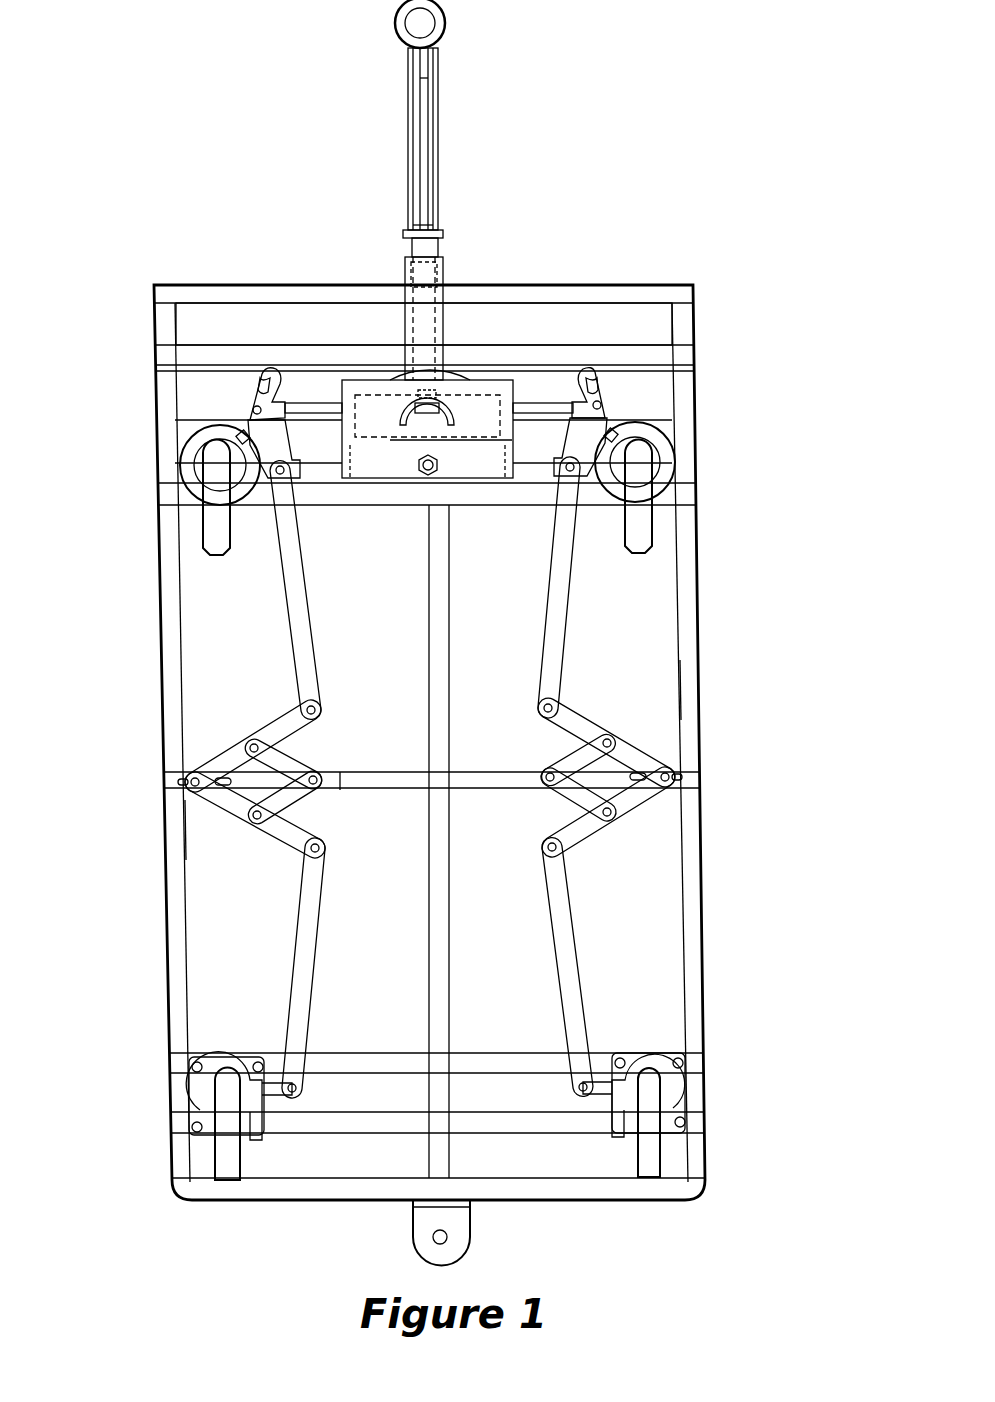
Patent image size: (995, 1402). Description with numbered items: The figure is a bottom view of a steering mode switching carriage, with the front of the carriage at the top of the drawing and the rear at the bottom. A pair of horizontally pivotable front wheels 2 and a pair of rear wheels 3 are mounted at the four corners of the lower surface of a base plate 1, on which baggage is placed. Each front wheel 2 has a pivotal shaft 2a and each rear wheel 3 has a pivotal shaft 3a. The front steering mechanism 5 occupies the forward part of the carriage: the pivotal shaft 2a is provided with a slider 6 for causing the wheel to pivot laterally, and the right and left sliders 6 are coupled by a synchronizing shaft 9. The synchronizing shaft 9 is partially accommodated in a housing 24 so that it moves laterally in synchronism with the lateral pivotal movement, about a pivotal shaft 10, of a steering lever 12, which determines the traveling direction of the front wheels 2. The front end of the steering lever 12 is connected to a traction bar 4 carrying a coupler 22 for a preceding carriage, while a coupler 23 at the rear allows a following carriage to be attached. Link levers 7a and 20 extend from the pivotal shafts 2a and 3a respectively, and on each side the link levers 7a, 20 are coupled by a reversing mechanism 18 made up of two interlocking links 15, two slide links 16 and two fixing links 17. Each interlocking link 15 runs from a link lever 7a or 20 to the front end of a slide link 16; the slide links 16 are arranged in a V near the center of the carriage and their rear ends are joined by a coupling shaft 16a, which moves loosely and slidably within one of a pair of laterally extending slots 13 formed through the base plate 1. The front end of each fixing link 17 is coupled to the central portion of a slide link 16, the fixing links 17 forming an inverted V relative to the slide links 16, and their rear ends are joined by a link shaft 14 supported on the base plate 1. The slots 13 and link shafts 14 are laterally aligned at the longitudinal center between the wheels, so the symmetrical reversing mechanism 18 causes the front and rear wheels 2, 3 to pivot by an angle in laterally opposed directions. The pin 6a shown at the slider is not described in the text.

The base plate 1 is at (353, 323).
The front wheel 2 is at (215, 467).
The pivotal shaft 2a is at (193, 478).
The rear wheel 3 is at (223, 1105).
The pivotal shaft 3a is at (222, 1081).
The traction bar 4 is at (436, 125).
The front steering mechanism 5 is at (565, 333).
The slider 6 is at (265, 370).
The hook pivot pin 6a is at (252, 383).
The link lever 7a is at (587, 470).
The synchronizing shaft 9 is at (297, 405).
The pivotal shaft 10 is at (432, 472).
The steering lever 12 is at (433, 300).
The slot 13 is at (190, 780).
The link shaft 14 is at (315, 773).
The interlocking link 15 is at (297, 627).
The slide link 16 is at (225, 762).
The coupling shaft 16a is at (190, 786).
The fixing link 17 is at (285, 762).
The reversing mechanism 18 is at (212, 817).
The link lever 20 is at (277, 1112).
The coupler 22 is at (440, 17).
The coupler 23 is at (447, 1237).
The housing 24 is at (473, 390).